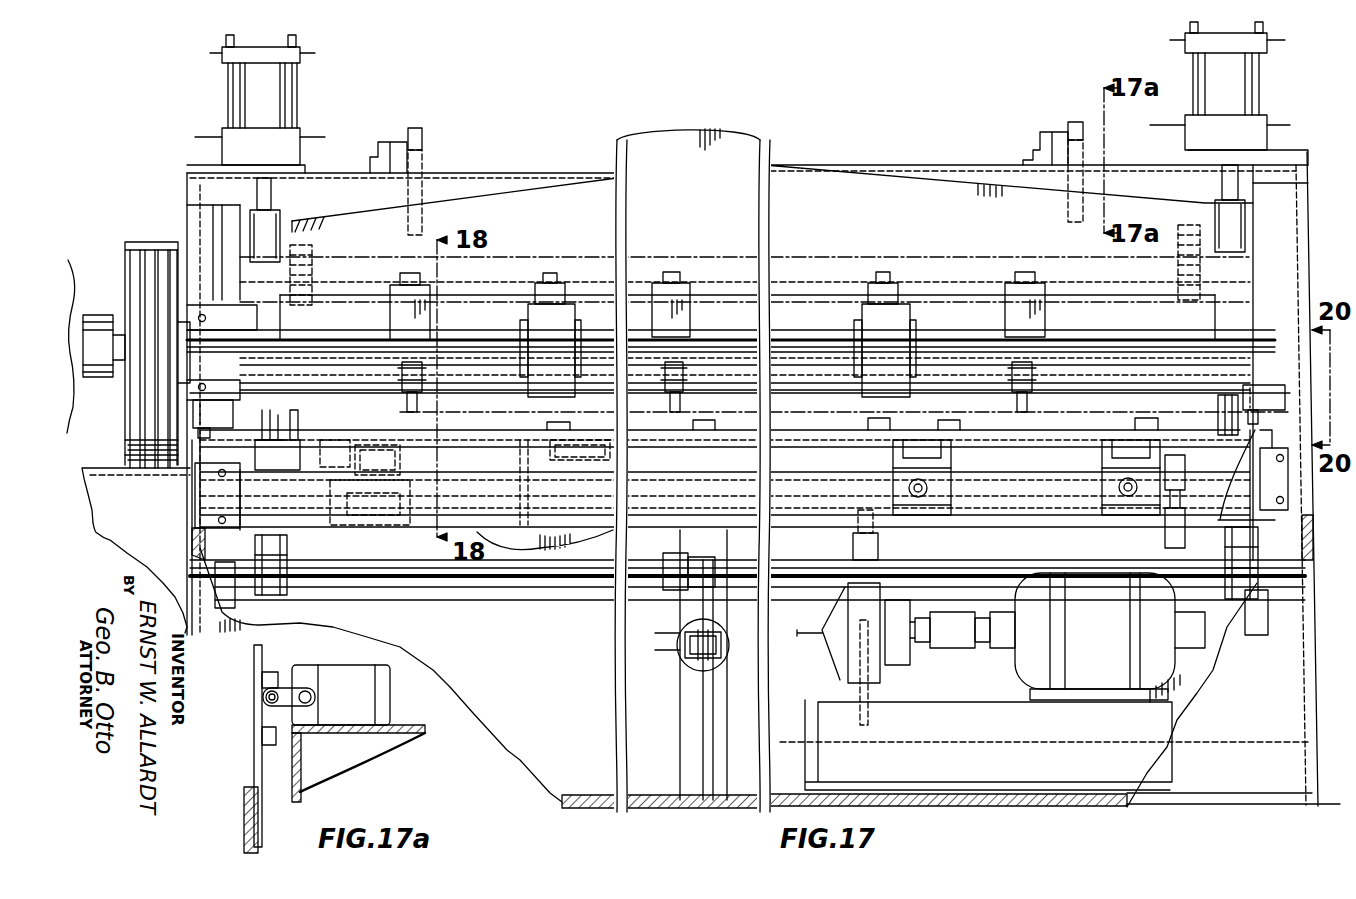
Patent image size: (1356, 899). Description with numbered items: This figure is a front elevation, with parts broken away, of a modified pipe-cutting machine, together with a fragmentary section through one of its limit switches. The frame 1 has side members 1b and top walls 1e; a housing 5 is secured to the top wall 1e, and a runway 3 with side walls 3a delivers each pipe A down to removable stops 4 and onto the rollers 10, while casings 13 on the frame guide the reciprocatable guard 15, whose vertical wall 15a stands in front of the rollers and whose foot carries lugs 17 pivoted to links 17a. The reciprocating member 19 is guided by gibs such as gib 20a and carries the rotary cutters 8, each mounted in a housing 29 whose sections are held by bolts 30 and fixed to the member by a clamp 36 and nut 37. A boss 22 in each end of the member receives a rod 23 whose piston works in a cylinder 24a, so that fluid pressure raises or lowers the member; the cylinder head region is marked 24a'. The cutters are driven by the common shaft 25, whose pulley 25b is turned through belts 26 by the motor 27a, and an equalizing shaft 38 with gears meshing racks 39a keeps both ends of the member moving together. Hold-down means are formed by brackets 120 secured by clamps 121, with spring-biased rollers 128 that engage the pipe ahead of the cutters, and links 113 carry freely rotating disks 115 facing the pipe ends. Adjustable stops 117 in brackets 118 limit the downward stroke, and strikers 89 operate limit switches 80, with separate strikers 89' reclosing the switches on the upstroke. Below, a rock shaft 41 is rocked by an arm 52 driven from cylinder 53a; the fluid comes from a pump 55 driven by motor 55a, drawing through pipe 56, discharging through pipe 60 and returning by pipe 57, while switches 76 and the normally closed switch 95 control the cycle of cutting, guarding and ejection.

In FIG. 17, the frame 1 is at (1257, 792).
In FIG. 17, the side members 1b is at (195, 535).
In FIG. 17, the top walls 1e is at (190, 175).
In FIG. 17, the runway 3 is at (480, 436).
In FIG. 17, the side walls 3a is at (322, 452).
In FIG. 17, the removable stops 4 is at (548, 434).
In FIG. 17, the housing 5 is at (498, 180).
In FIG. 17A, the housing 5 is at (420, 730).
In FIG. 17, the cutters 8 is at (1061, 421).
In FIG. 17, the rollers 10 is at (1115, 460).
In FIG. 17, the casings 13 is at (1295, 505).
In FIG. 17, the guard 15 is at (878, 436).
In FIG. 17, the vertical wall 15a is at (852, 540).
In FIG. 17, the lugs 17 is at (255, 535).
In FIG. 17, the links 17a is at (1258, 550).
In FIG. 17, the reciprocating member 19 is at (808, 170).
In FIG. 17A, the reciprocating member 19 is at (244, 795).
In FIG. 17, the gib 20a is at (222, 220).
In FIG. 17, the boss 22 is at (1215, 218).
In FIG. 17, the rod 23 is at (1222, 180).
In FIG. 17, the cylinder 24a is at (254, 104).
In FIG. 17, the cylinder head 24a' is at (324, 102).
In FIG. 17, the driven shaft 25 is at (1118, 340).
In FIG. 17, the power driven element 25b is at (130, 245).
In FIG. 17, the belts 26 is at (165, 240).
In FIG. 17, the motor 27a is at (73, 262).
In FIG. 17, the housing 29 is at (862, 312).
In FIG. 17A, the bolts 30 is at (345, 665).
In FIG. 17, the clamp 36 is at (870, 284).
In FIG. 17, the nut 37 is at (884, 270).
In FIG. 17, the shaft 38 is at (590, 264).
In FIG. 17, the rack 39a is at (1168, 305).
In FIG. 17, the rock shaft 41 is at (520, 584).
In FIG. 17, the arm 52 is at (700, 602).
In FIG. 17, the cylinder 53a is at (690, 660).
In FIG. 17, the pump 55 is at (908, 653).
In FIG. 17, the motor 55a is at (1022, 665).
In FIG. 17, the pipe 56 is at (848, 685).
In FIG. 17, the return pipe 57 is at (905, 762).
In FIG. 17, the discharge pipe 60 is at (812, 632).
In FIG. 17, the switches 76 is at (1165, 530).
In FIG. 17, the limit switch 80 is at (1053, 135).
In FIG. 17, the striker 89 is at (755, 162).
In FIG. 17A, the striker 89 is at (288, 670).
In FIG. 17, the separate striker 89' is at (750, 181).
In FIG. 17A, the separate striker 89' is at (245, 746).
In FIG. 17, the normally closed switch 95 is at (1265, 630).
In FIG. 17, the link 113 is at (1240, 432).
In FIG. 17, the disk 115 is at (1218, 414).
In FIG. 17, the stop 117 is at (1255, 387).
In FIG. 17, the bracket 118 is at (1258, 418).
In FIG. 17, the bracket 120 is at (1008, 388).
In FIG. 17, the clamp 121 is at (1005, 285).
In FIG. 17, the roller 128 is at (1028, 410).
In FIG. 17, the pipe A is at (512, 446).